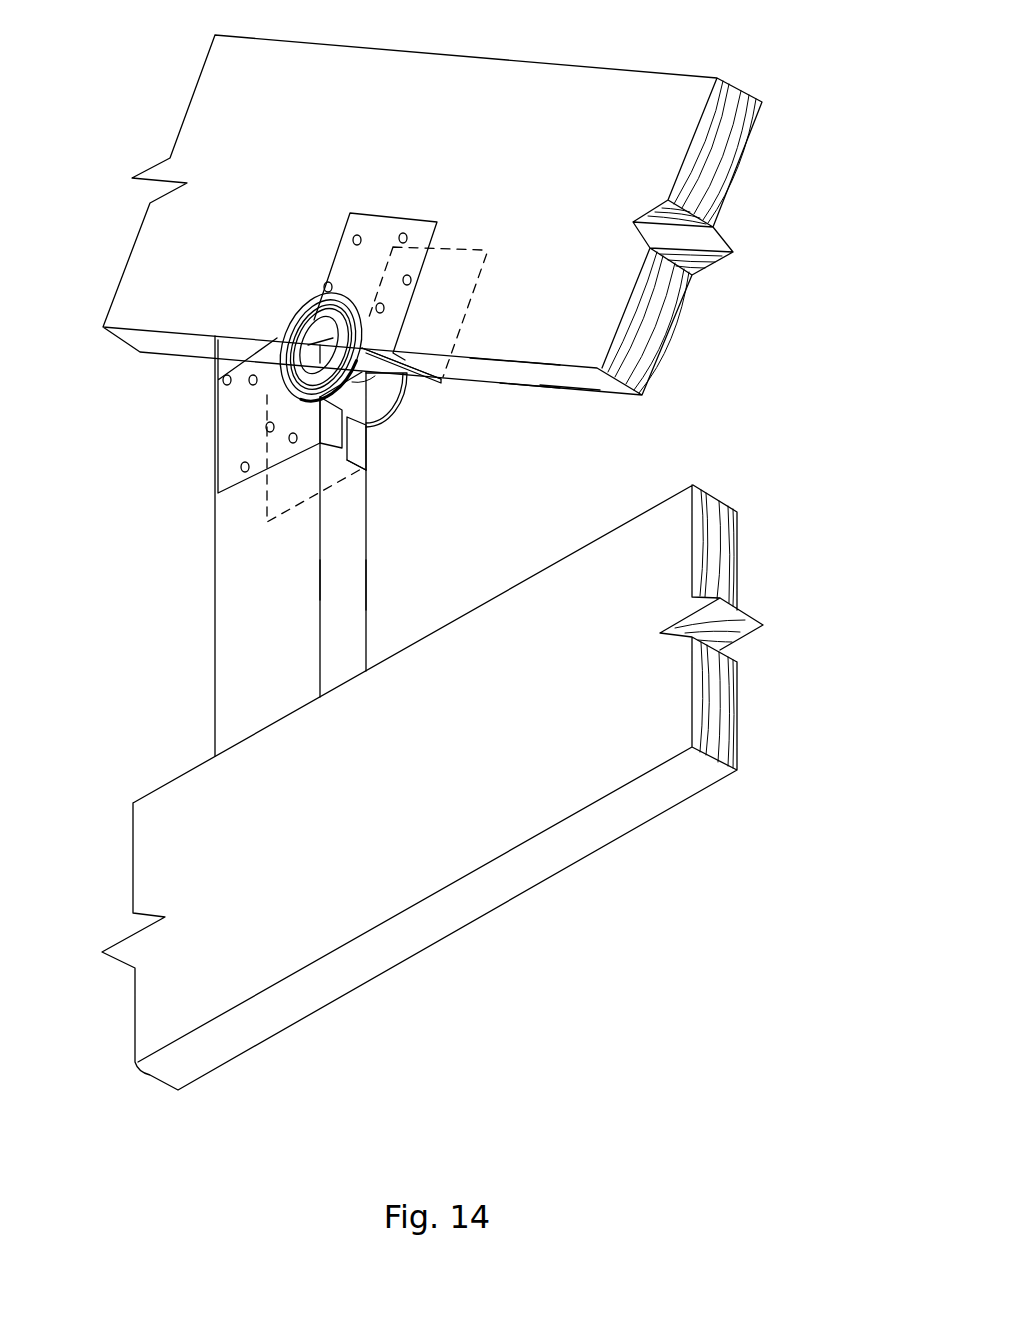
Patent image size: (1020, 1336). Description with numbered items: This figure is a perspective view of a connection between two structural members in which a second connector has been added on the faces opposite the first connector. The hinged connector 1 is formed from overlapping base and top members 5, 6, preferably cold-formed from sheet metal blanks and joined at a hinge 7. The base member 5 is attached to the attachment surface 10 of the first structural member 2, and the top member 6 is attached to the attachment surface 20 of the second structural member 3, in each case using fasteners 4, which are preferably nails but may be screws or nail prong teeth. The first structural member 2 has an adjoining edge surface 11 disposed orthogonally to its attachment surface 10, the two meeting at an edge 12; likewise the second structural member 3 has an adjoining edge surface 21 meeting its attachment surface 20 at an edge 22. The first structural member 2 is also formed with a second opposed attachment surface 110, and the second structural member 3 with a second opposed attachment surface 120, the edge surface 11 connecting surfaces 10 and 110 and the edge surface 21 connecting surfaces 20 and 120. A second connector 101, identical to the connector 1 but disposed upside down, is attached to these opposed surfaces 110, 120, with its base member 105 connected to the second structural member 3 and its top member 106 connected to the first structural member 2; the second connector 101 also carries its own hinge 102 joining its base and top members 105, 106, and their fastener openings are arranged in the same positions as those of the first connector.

The hinged connector 1 is at (336, 353).
The first structural member 2 is at (370, 582).
The second structural member 3 is at (555, 398).
The fasteners 4 is at (328, 284).
The base member 5 is at (256, 478).
The top member 6 is at (346, 214).
The hinge 7 is at (297, 310).
The attachment surface 10 is at (258, 580).
The adjoining edge surface 11 is at (345, 548).
The edge 12 is at (320, 578).
The attachment surface 20 is at (556, 268).
The adjoining edge surface 21 is at (512, 372).
The edge 22 is at (503, 358).
The second connector 101 is at (373, 453).
The curved gusset 102 is at (400, 398).
The base member 105 is at (441, 381).
The top member 106 is at (370, 472).
The second opposed attachment surface 110 is at (366, 633).
The second opposed attachment surface 120 is at (668, 348).